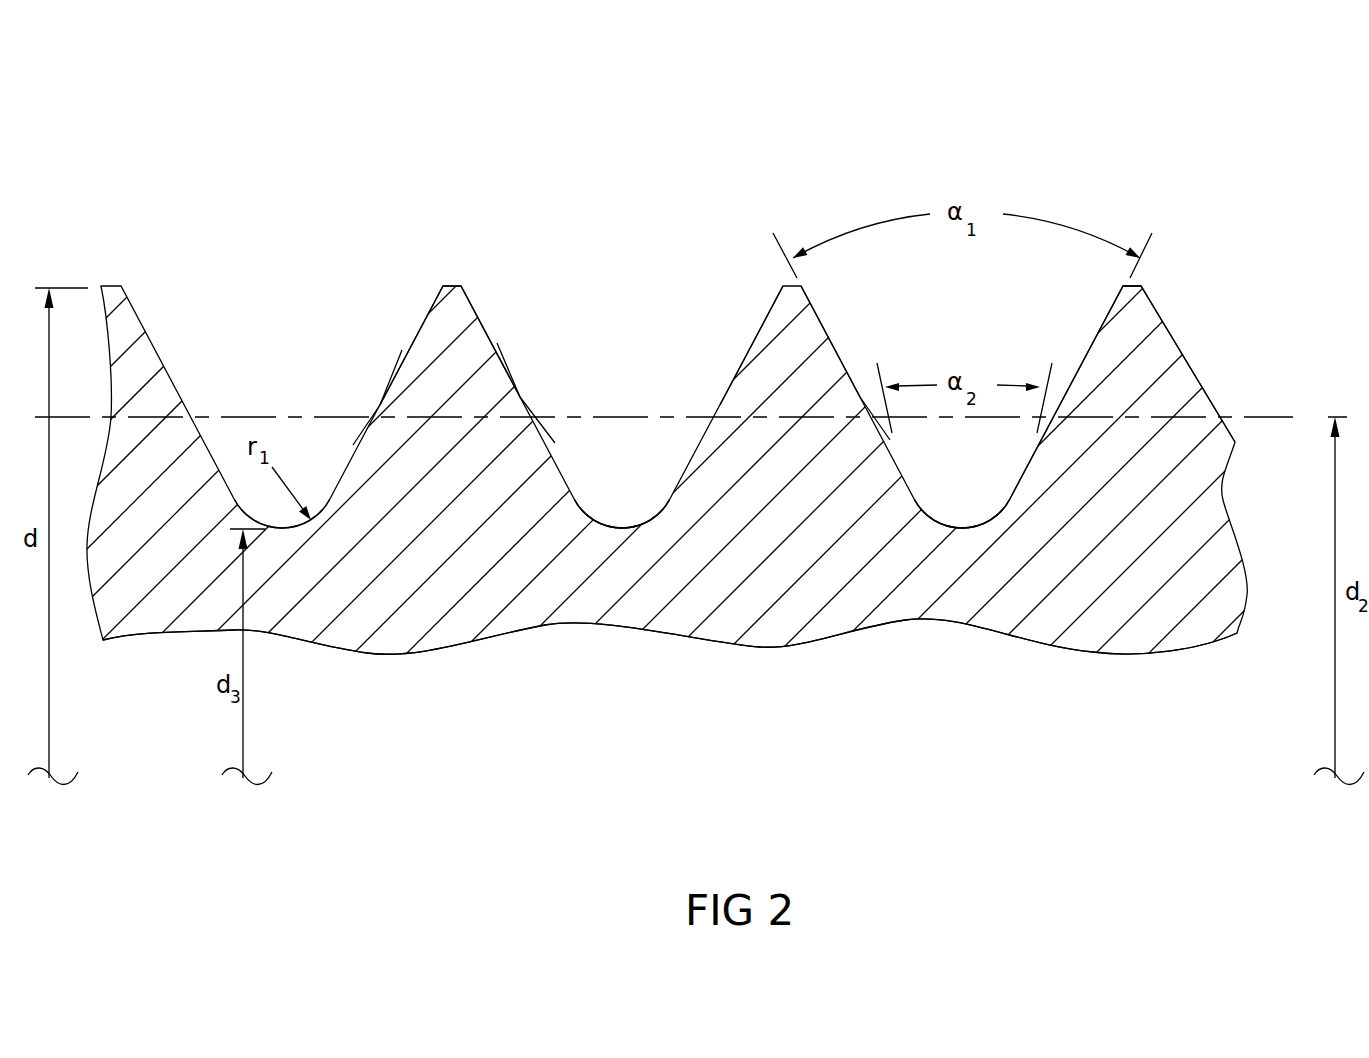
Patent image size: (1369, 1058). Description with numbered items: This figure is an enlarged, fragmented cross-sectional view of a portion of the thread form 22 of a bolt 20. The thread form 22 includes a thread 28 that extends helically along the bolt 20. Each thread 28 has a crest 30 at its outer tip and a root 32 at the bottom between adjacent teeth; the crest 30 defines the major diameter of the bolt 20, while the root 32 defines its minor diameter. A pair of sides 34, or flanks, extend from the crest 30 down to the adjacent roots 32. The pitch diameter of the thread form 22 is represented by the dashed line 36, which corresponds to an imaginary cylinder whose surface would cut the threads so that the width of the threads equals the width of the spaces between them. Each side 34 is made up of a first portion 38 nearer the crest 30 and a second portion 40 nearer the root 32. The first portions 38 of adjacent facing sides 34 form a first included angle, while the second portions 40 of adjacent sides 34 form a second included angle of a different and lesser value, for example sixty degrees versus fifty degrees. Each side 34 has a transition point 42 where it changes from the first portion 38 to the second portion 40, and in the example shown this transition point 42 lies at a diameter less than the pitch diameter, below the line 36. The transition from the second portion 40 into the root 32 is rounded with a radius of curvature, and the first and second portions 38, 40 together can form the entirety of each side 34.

The bolt 20 is at (397, 640).
The thread form 22 is at (172, 144).
The thread 28 is at (1157, 337).
The crest 30 is at (455, 284).
The root 32 is at (623, 527).
The side 34 is at (402, 350).
The pitch diameter line 36 is at (1293, 416).
The first portion 38 is at (430, 312).
The second portion 40 is at (343, 466).
The transition point 42 is at (352, 444).